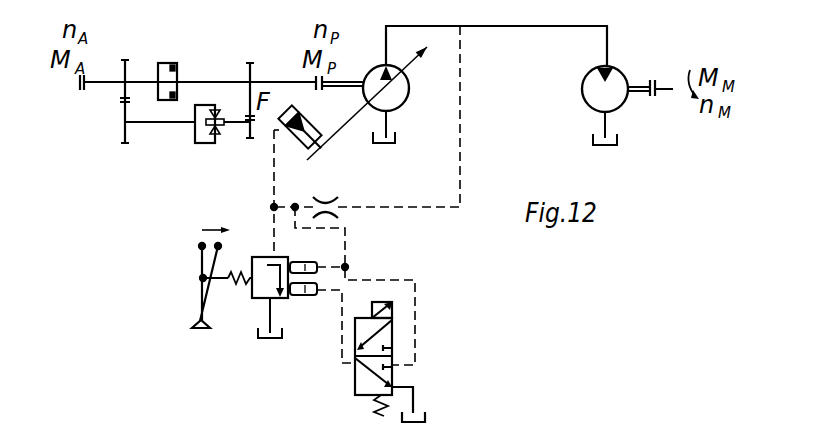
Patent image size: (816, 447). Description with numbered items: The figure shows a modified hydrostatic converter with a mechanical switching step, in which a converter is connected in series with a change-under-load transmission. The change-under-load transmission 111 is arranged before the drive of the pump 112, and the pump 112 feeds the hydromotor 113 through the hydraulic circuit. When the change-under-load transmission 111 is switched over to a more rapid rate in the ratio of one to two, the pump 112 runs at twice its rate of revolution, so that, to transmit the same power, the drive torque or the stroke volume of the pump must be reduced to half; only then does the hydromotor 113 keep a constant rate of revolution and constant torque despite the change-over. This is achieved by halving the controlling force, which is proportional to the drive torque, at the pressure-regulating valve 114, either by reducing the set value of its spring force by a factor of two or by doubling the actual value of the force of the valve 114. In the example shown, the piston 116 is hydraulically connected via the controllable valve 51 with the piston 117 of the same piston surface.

The change-under-load transmission 111 is at (200, 82).
The pump 112 is at (403, 112).
The hydromotor 113 is at (615, 113).
The pressure-regulating valve 114 is at (258, 300).
The piston 116 is at (318, 257).
The piston 117 is at (312, 298).
The controllable valve 51 is at (392, 338).